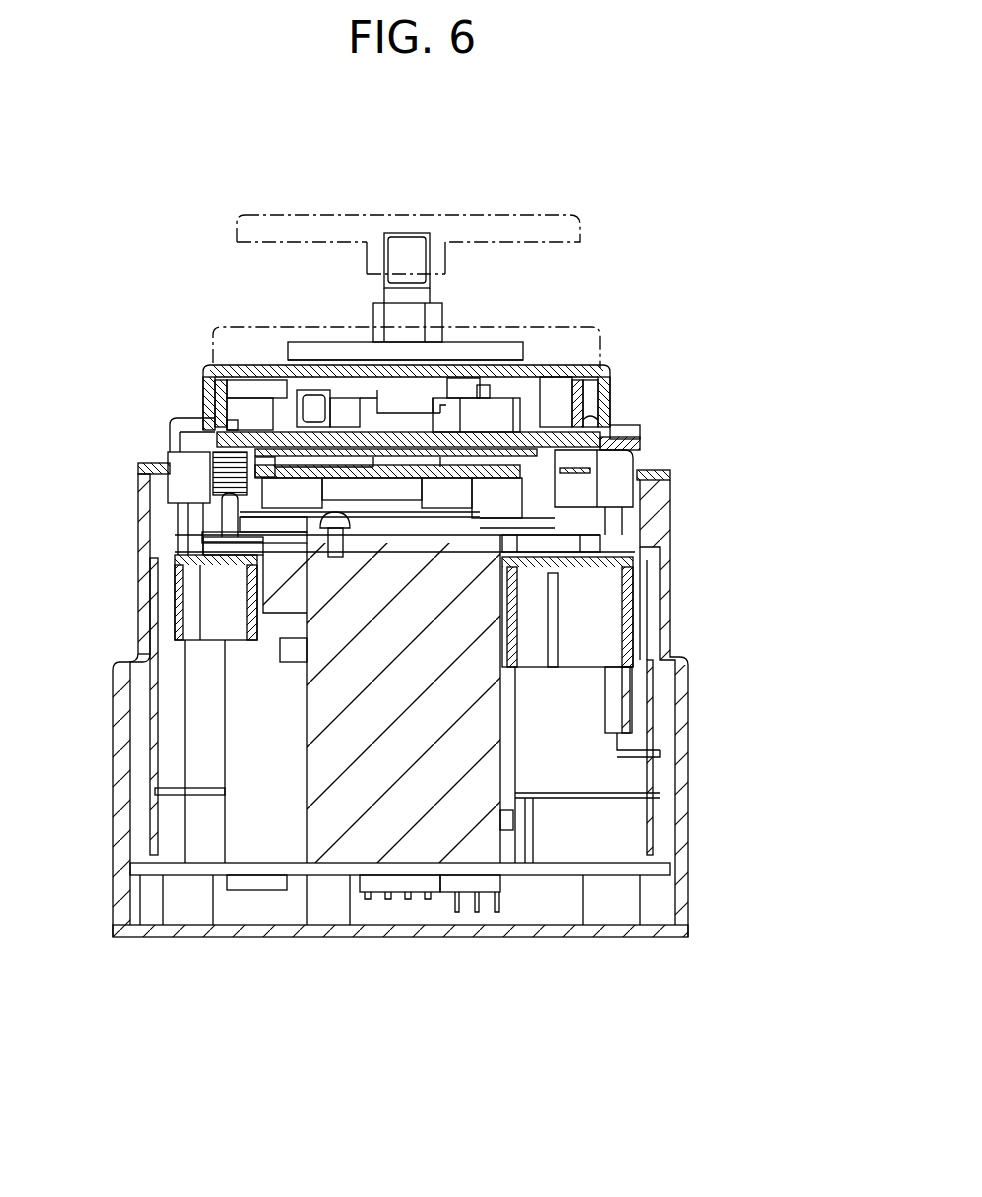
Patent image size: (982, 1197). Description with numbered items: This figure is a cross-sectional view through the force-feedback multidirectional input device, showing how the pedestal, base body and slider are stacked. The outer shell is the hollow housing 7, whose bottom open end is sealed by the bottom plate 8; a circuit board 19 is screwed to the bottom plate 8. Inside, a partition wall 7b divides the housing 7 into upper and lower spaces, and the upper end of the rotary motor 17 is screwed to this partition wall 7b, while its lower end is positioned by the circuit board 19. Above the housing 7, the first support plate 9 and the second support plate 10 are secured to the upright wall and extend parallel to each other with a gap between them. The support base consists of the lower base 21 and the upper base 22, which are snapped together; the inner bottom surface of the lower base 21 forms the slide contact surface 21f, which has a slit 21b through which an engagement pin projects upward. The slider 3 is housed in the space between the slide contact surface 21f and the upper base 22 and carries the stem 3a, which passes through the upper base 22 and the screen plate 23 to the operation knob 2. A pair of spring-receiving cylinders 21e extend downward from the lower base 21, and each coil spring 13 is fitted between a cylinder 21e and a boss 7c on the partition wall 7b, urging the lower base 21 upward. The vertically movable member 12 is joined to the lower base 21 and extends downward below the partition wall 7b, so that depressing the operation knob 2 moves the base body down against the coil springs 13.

The operation knob 2 is at (578, 218).
The slider 3 is at (513, 388).
The stem 3a is at (432, 292).
The screen plate 23 is at (575, 324).
The upper base 22 is at (240, 364).
The lower base 21 is at (180, 432).
The slit 21b is at (219, 399).
The spring-receiving cylinder 21e is at (207, 467).
The slide contact surface 21f is at (576, 416).
The coil spring 13 is at (213, 490).
The boss 7c is at (230, 523).
The first support plate 9 is at (582, 447).
The second support plate 10 is at (578, 532).
The vertically movable member 12 is at (180, 601).
The partition wall 7b is at (570, 548).
The housing 7 is at (690, 683).
The rotary motor 17 is at (302, 826).
The circuit board 19 is at (590, 862).
The bottom plate 8 is at (527, 937).